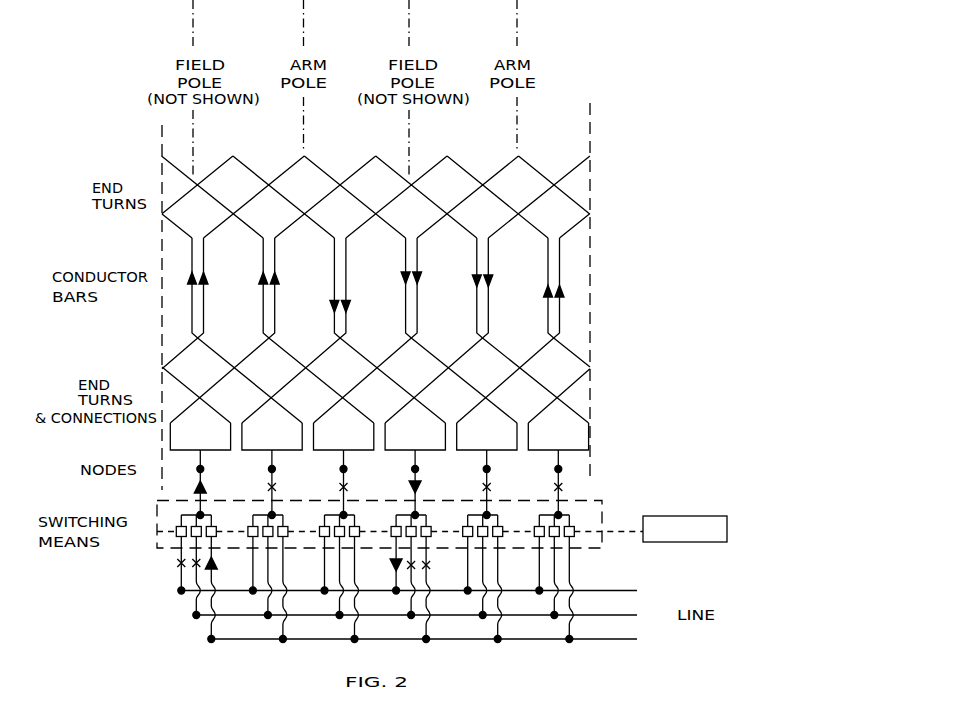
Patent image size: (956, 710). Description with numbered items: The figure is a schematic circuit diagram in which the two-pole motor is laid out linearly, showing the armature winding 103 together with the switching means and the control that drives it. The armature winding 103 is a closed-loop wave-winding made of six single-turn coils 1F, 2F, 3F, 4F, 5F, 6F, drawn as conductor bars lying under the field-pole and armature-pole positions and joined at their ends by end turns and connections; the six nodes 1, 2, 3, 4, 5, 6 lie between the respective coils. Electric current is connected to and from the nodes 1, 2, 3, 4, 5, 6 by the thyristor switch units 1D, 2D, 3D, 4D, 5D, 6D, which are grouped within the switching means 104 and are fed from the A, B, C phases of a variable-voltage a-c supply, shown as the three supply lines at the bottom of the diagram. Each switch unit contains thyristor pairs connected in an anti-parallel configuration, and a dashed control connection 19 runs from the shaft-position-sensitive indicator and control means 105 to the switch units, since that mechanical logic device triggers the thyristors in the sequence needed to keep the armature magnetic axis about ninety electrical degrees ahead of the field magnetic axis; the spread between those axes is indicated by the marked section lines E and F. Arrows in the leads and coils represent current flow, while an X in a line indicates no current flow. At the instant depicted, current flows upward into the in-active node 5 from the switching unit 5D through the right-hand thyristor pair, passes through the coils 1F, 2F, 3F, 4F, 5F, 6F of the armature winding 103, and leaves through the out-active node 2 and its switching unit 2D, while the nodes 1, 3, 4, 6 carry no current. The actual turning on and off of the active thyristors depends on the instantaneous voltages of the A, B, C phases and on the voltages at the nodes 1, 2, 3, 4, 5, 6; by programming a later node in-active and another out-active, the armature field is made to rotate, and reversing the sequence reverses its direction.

The armature winding 103 is at (630, 362).
The switching means 104 is at (157, 547).
The shaft-position-sensitive indicator and control means 105 is at (677, 514).
The control connection 19 is at (608, 529).
The node 1 is at (340, 469).
The node 2 is at (412, 469).
The node 3 is at (483, 469).
The node 4 is at (555, 469).
The node 5 is at (204, 469).
The node 6 is at (268, 469).
The thyristor switch unit 1D is at (347, 514).
The thyristor switch unit 2D is at (419, 514).
The thyristor switch unit 3D is at (490, 514).
The thyristor switch unit 4D is at (562, 514).
The thyristor switch unit 5D is at (204, 514).
The thyristor switch unit 6D is at (275, 514).
The coil 1F is at (262, 317).
The coil 2F is at (334, 275).
The coil 3F is at (204, 316).
The coil 4F is at (276, 329).
The coil 5F is at (347, 297).
The coil 6F is at (192, 319).
The phase A is at (416, 590).
The phase B is at (423, 614).
The phase C is at (432, 637).
The section line E is at (590, 284).
The section line F is at (379, 308).